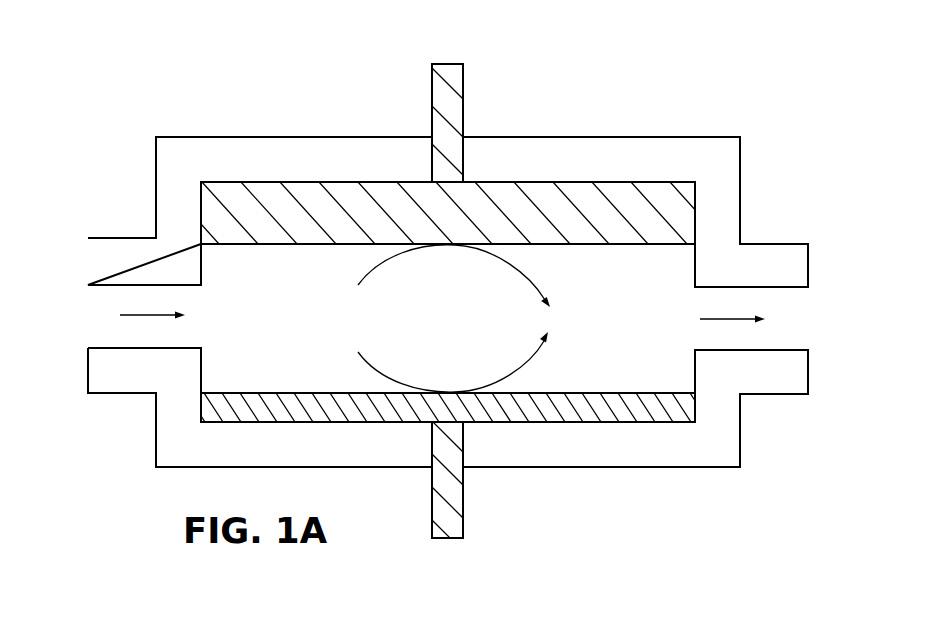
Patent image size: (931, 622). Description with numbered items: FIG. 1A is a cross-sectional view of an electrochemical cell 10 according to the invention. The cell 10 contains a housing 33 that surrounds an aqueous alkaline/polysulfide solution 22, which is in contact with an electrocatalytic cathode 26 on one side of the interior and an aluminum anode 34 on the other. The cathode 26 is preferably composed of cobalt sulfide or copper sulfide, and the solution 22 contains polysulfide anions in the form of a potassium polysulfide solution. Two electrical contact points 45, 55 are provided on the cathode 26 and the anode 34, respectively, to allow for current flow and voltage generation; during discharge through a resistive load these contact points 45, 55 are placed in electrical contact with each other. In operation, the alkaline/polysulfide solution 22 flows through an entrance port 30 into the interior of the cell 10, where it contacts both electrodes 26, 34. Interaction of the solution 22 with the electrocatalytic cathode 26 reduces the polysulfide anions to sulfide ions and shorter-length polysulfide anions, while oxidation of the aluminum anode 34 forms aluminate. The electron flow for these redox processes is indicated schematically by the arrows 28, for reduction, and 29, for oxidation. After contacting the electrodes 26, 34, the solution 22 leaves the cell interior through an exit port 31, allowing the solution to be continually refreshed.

The electrochemical cell 10 is at (181, 81).
The aqueous alkaline/polysulfide solution 22 is at (258, 308).
The electrocatalytic cathode 26 is at (635, 398).
The arrow indicating reduction 28 is at (522, 368).
The arrow indicating oxidation 29 is at (390, 260).
The entrance port 30 is at (86, 309).
The exit port 31 is at (809, 310).
The housing 33 is at (800, 262).
The aluminum anode 34 is at (617, 237).
The electrical contact point 45 is at (447, 540).
The electrical contact point 55 is at (447, 64).